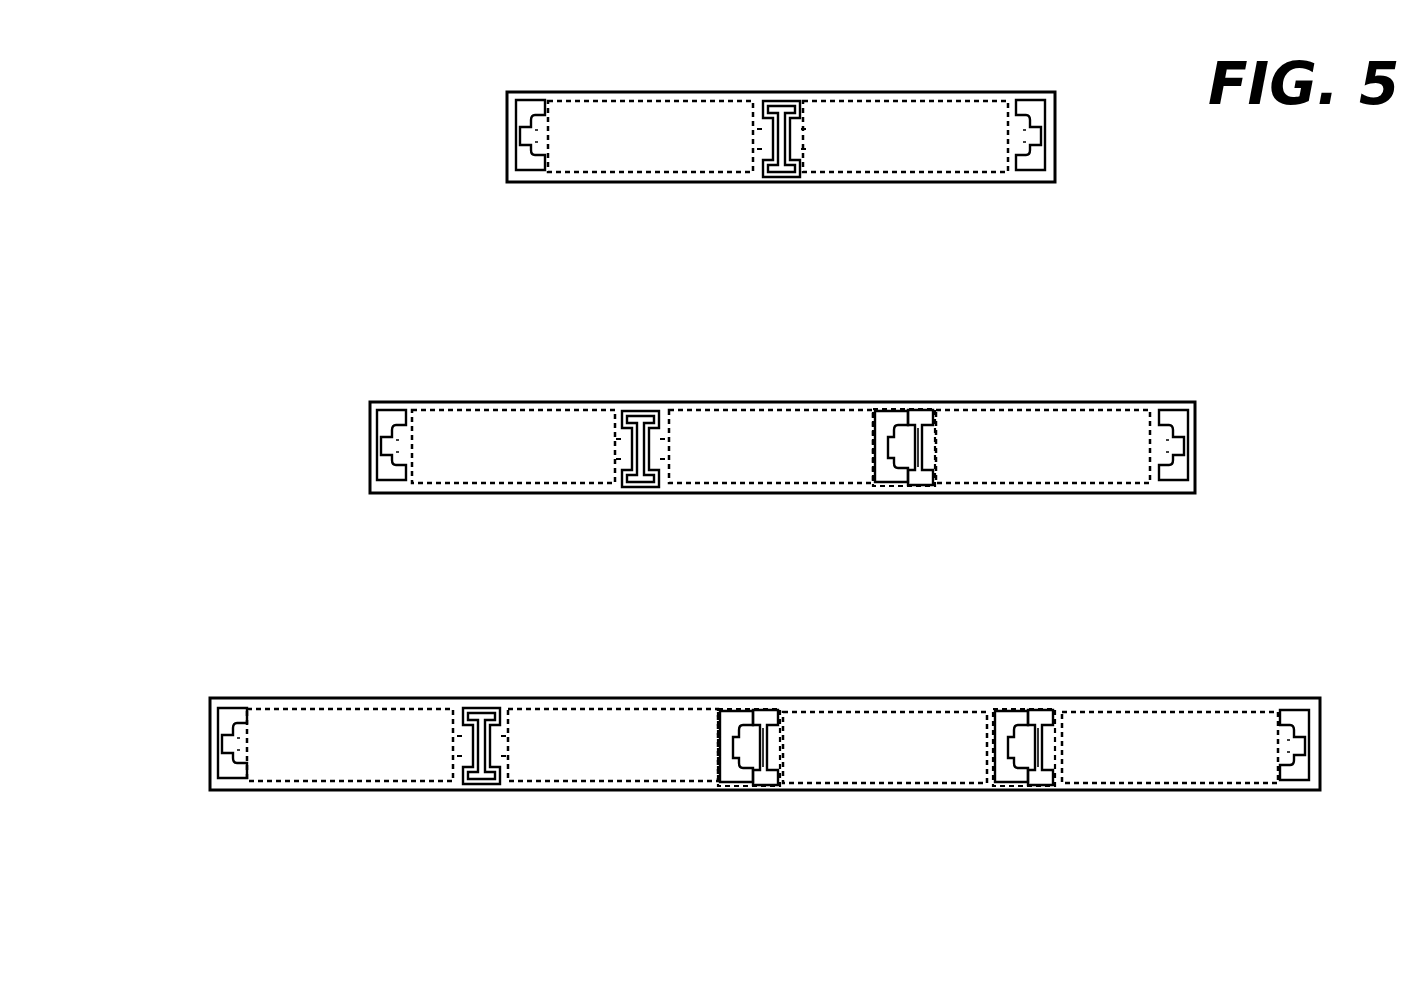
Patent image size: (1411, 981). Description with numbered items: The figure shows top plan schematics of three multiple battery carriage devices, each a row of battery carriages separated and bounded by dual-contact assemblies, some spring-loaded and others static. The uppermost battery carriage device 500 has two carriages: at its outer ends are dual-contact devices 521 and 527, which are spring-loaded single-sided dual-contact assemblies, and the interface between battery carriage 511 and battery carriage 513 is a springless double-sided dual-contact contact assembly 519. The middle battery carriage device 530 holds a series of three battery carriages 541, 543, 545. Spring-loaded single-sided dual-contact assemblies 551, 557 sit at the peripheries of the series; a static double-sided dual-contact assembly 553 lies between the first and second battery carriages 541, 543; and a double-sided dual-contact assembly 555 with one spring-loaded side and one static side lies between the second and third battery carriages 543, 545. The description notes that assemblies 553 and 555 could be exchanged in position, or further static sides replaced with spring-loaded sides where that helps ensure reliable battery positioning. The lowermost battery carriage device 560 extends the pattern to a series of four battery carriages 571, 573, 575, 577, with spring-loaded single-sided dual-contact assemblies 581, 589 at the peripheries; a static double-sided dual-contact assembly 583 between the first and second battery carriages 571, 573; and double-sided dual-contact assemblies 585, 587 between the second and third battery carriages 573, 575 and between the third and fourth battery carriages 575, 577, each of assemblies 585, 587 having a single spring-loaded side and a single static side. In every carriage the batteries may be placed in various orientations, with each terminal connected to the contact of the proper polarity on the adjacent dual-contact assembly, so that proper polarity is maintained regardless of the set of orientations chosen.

The battery carriage device 500 is at (445, 72).
The battery carriage 511 is at (652, 196).
The battery carriage 513 is at (903, 196).
The springless double-sided dual-contact contact assembly 519 is at (773, 183).
The spring-loaded single-sided dual-contact assembly 521 is at (525, 183).
The spring-loaded single-sided dual-contact assembly 527 is at (1028, 183).
The battery carriage device 530 is at (328, 353).
The battery carriage 541 is at (517, 508).
The battery carriage 543 is at (765, 508).
The battery carriage 545 is at (1058, 508).
The spring-loaded single-sided dual-contact assembly 551 is at (385, 494).
The static double-sided dual-contact assembly 553 is at (637, 494).
The double-sided dual-contact assembly 555 is at (908, 494).
The spring-loaded single-sided dual-contact assembly 557 is at (1172, 494).
The battery carriage device 560 is at (285, 648).
The battery carriage 571 is at (353, 806).
The battery carriage 573 is at (604, 806).
The battery carriage 575 is at (897, 806).
The battery carriage 577 is at (1178, 806).
The spring-loaded single-sided dual-contact assembly 581 is at (228, 791).
The static double-sided dual-contact assembly 583 is at (478, 791).
The double-sided dual-contact assembly 585 is at (750, 791).
The double-sided dual-contact assembly 587 is at (1010, 791).
The spring-loaded single-sided dual-contact assembly 589 is at (1290, 791).